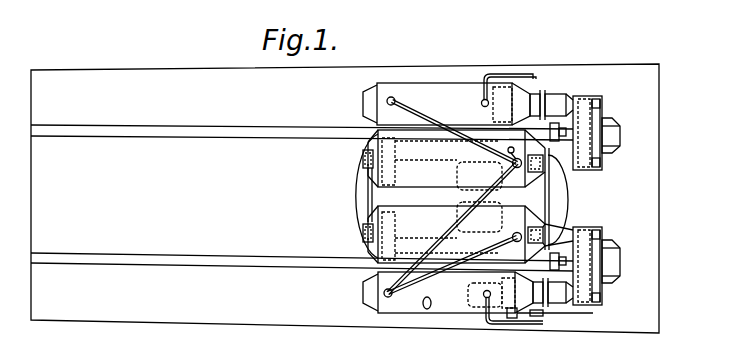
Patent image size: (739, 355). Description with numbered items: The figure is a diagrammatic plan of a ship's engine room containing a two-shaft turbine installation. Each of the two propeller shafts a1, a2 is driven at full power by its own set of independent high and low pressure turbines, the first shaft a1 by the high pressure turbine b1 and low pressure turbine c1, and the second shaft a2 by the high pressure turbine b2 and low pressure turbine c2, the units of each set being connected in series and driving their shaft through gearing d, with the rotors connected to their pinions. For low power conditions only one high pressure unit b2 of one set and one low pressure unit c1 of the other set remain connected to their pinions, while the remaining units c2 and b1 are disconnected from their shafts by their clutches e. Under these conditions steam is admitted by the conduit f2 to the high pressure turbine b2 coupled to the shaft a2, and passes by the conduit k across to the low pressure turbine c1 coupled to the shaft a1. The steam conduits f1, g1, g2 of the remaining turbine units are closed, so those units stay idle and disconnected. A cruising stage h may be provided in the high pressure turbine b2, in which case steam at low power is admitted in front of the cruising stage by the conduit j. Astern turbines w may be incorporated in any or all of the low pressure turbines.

The shaft a1 is at (82, 136).
The shaft a2 is at (82, 264).
The high pressure turbine b1 is at (454, 123).
The high pressure turbine b2 is at (455, 237).
The low pressure turbine c1 is at (456, 160).
The low pressure turbine c2 is at (456, 232).
The gearing d is at (583, 172).
The clutch e is at (557, 101).
The steam conduit f1 is at (536, 76).
The steam conduit f2 is at (543, 325).
The steam conduit g1 is at (519, 155).
The steam conduit g2 is at (470, 271).
The cruising stage h is at (474, 299).
The conduit j is at (562, 319).
The conduit k is at (526, 184).
The astern turbine w is at (392, 171).